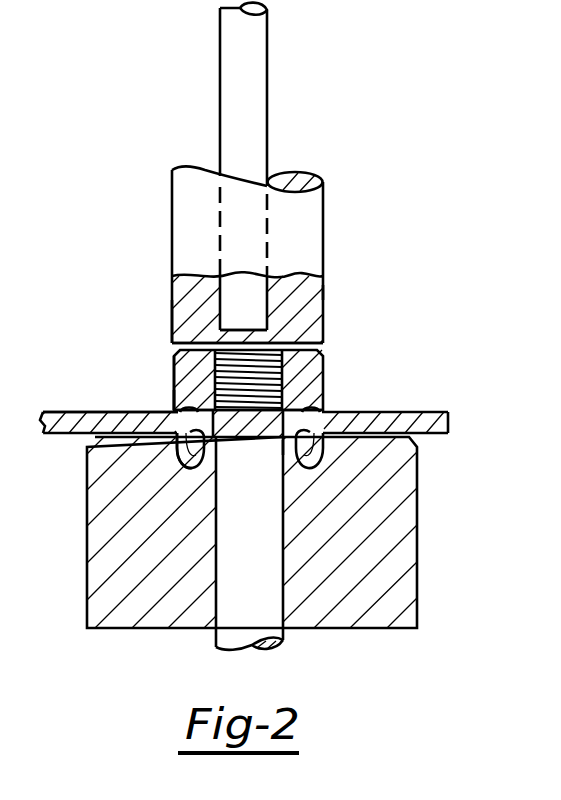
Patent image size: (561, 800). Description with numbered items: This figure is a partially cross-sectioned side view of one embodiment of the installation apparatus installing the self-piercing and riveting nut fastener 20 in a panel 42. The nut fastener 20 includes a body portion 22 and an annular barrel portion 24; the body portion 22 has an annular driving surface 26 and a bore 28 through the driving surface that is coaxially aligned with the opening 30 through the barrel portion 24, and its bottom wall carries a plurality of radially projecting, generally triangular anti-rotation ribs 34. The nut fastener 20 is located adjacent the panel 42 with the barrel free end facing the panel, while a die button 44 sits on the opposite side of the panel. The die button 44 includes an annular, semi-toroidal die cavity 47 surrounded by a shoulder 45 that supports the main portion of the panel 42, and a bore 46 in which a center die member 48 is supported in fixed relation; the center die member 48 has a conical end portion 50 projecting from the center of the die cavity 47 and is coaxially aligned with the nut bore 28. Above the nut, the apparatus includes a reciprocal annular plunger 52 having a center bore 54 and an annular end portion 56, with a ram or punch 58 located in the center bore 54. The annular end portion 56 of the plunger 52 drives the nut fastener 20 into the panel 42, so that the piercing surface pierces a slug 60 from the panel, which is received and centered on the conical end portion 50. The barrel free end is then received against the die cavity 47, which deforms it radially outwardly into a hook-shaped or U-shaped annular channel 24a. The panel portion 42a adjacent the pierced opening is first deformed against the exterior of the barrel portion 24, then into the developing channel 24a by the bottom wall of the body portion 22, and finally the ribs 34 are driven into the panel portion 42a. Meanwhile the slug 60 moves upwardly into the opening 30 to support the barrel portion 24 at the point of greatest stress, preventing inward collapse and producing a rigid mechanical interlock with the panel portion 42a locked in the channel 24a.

The self-piercing and riveting nut fastener 20 is at (175, 363).
The body portion 22 is at (318, 380).
The annular barrel portion 24 is at (205, 456).
The U-shaped annular channel 24a is at (177, 442).
The annular driving surface 26 is at (178, 343).
The bore 28 is at (268, 306).
The opening 30 is at (275, 450).
The radially projecting ribs 34 is at (330, 410).
The panel 42 is at (430, 412).
The panel portion 42a is at (323, 438).
The die button 44 is at (395, 596).
The shoulder 45 is at (112, 412).
The bore 46 is at (216, 632).
The annular die cavity 47 is at (310, 447).
The center die member 48 is at (268, 541).
The conical end portion 50 is at (185, 393).
The reciprocal annular plunger 52 is at (323, 222).
The center bore 54 is at (267, 338).
The annular end portion 56 is at (325, 350).
The ram or punch 58 is at (258, 96).
The slug 60 is at (258, 376).